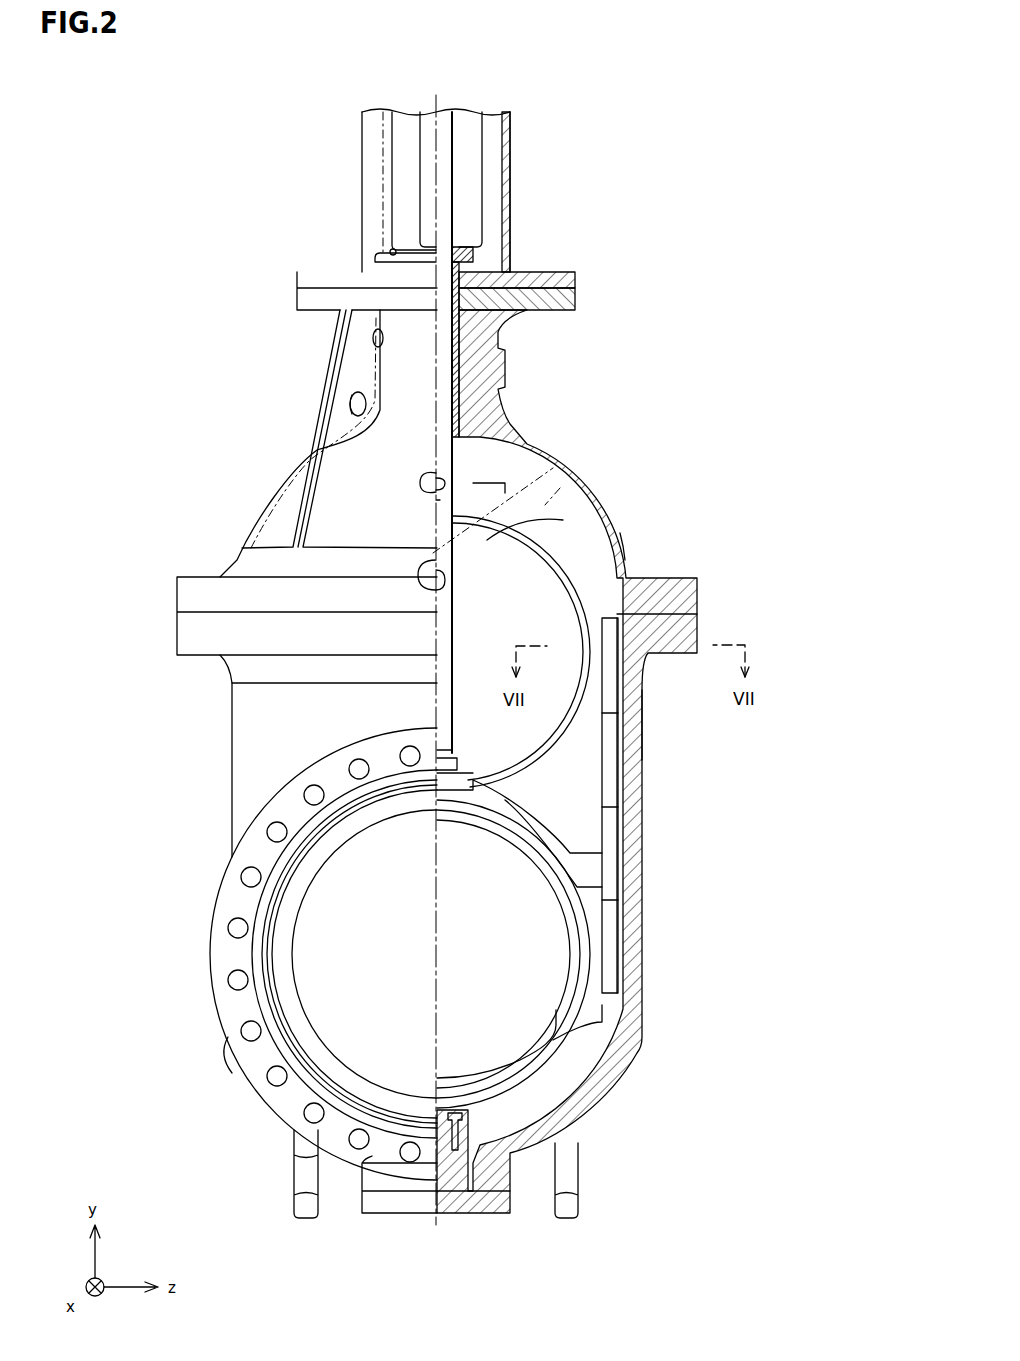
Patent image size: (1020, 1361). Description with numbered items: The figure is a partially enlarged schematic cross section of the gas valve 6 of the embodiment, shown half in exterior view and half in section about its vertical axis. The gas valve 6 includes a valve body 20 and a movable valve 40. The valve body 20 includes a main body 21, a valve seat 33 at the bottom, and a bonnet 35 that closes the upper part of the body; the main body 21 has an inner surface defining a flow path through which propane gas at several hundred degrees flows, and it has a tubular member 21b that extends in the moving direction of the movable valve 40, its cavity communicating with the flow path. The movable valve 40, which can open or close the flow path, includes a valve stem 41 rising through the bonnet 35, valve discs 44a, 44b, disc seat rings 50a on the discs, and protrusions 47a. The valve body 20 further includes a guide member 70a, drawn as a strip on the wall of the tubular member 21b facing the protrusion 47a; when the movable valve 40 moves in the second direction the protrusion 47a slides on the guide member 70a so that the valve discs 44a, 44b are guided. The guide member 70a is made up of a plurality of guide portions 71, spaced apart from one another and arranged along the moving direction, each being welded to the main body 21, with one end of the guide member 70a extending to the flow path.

The gas valve 6 is at (676, 97).
The valve body 20 is at (623, 597).
The main body 21 is at (637, 993).
The tubular member 21b is at (638, 687).
The valve seat 33 is at (455, 1205).
The bonnet 35 is at (437, 630).
The movable valve 40 is at (755, 1003).
The valve stem 41 is at (453, 462).
The valve disc 44a is at (560, 488).
The valve disc 44b is at (552, 496).
The protrusion 47a is at (620, 533).
The disc seat ring 50a is at (620, 507).
The guide member 70a is at (697, 727).
The guide portion 71 is at (620, 705).